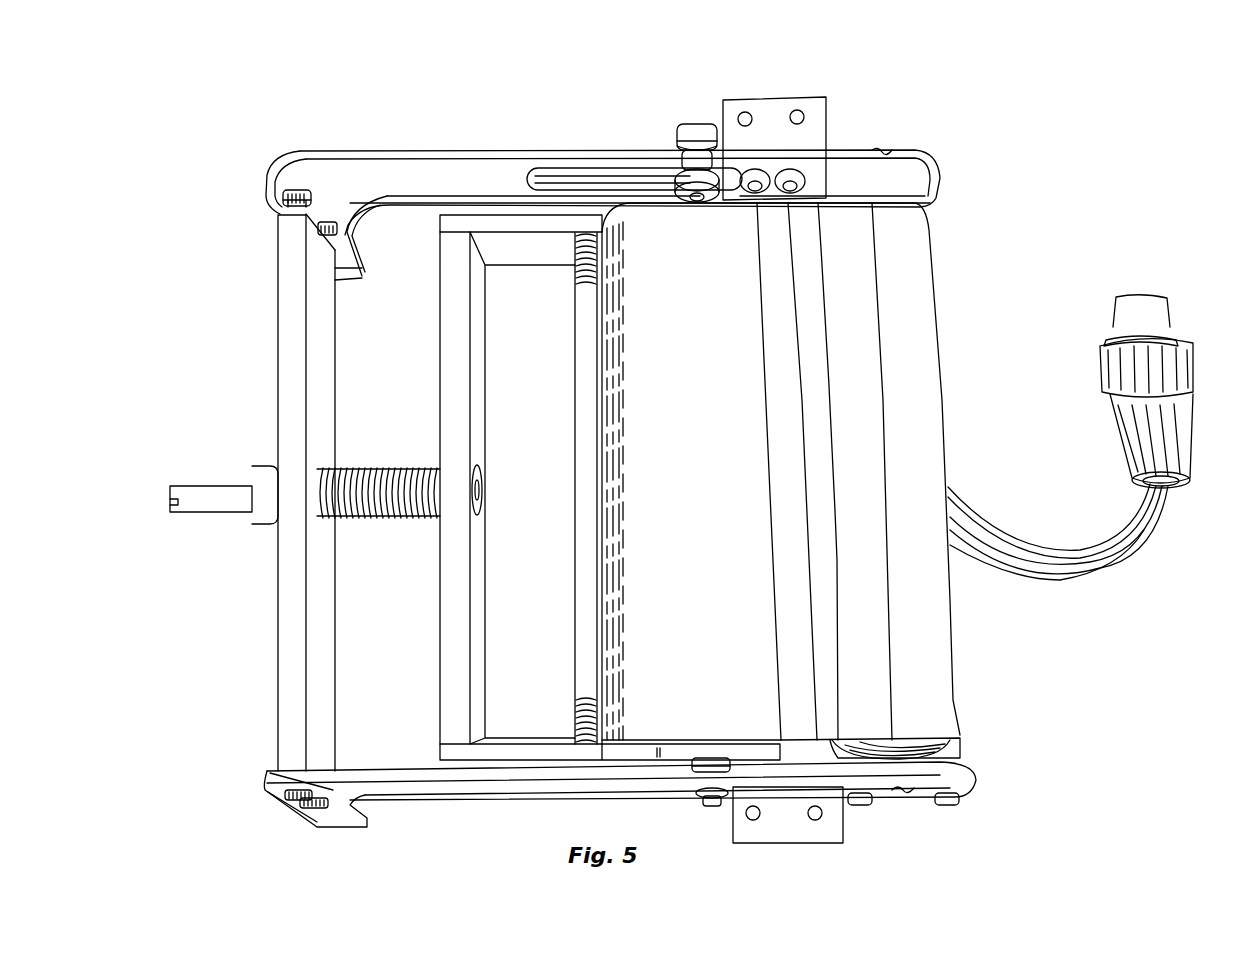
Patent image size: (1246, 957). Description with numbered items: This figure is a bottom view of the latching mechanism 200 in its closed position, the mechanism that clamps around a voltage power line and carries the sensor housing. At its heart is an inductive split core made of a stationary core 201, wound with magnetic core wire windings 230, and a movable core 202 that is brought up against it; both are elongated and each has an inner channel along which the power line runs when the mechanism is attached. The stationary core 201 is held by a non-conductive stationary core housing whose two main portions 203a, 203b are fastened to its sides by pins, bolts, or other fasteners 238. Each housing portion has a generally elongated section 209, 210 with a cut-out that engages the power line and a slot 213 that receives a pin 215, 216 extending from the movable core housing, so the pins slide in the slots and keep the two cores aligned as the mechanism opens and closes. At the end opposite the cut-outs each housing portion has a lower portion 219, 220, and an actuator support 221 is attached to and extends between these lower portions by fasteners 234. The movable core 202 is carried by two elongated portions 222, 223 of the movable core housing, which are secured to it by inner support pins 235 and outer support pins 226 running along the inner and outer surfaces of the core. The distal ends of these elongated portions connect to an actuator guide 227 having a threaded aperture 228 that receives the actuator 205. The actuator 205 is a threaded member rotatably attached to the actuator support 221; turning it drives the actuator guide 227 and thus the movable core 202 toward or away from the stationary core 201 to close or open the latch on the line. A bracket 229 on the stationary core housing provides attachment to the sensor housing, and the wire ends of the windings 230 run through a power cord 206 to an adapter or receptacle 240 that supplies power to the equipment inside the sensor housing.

The latching mechanism 200 is at (296, 76).
The stationary core 201 is at (904, 456).
The movable core 202 is at (716, 512).
The stationary core housing portion 203a is at (905, 790).
The stationary core housing portion 203b is at (881, 150).
The actuator 205 is at (210, 497).
The power cord 206 is at (1150, 540).
The elongated section 209 is at (432, 163).
The elongated section 210 is at (478, 780).
The slot 213 is at (580, 170).
The pin 215 is at (690, 128).
The pin 216 is at (712, 808).
The lower portion 219 is at (340, 253).
The lower portion 220 is at (340, 815).
The actuator support 221 is at (291, 660).
The elongated portion 222 is at (520, 243).
The elongated portion 223 is at (562, 752).
The outer support pin 226 is at (590, 397).
The actuator guide 227 is at (456, 655).
The aperture 228 is at (483, 492).
The bracket 229 is at (792, 835).
The magnetic core wire windings 230 is at (788, 98).
The fastener 234 is at (285, 203).
The inner support pin 235 is at (320, 478).
The fastener 238 is at (862, 808).
The adapter or receptacle 240 is at (1178, 340).